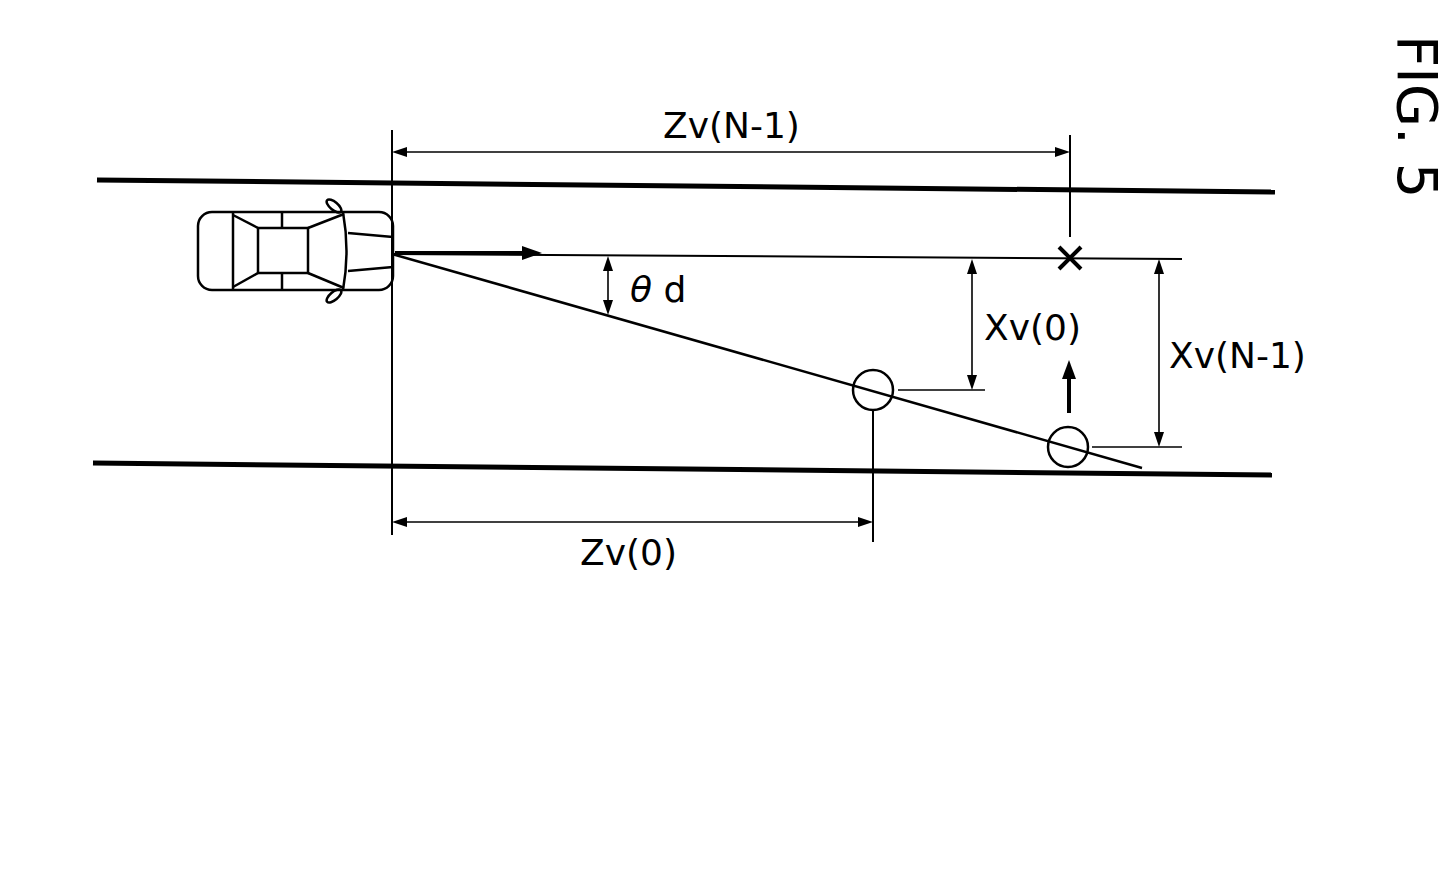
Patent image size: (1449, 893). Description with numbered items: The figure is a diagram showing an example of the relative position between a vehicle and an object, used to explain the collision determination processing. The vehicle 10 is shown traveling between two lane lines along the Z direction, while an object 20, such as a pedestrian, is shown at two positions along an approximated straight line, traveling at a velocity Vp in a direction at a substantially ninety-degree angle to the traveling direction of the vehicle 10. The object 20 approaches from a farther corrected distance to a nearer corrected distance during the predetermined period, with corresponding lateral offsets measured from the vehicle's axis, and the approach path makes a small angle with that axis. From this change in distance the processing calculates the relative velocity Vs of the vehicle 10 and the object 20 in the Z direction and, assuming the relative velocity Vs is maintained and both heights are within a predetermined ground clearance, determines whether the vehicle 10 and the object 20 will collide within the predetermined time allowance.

The vehicle 10 is at (278, 212).
The object 20 is at (888, 402).
The relative velocity Vs is at (468, 235).
The velocity Vp is at (1097, 386).